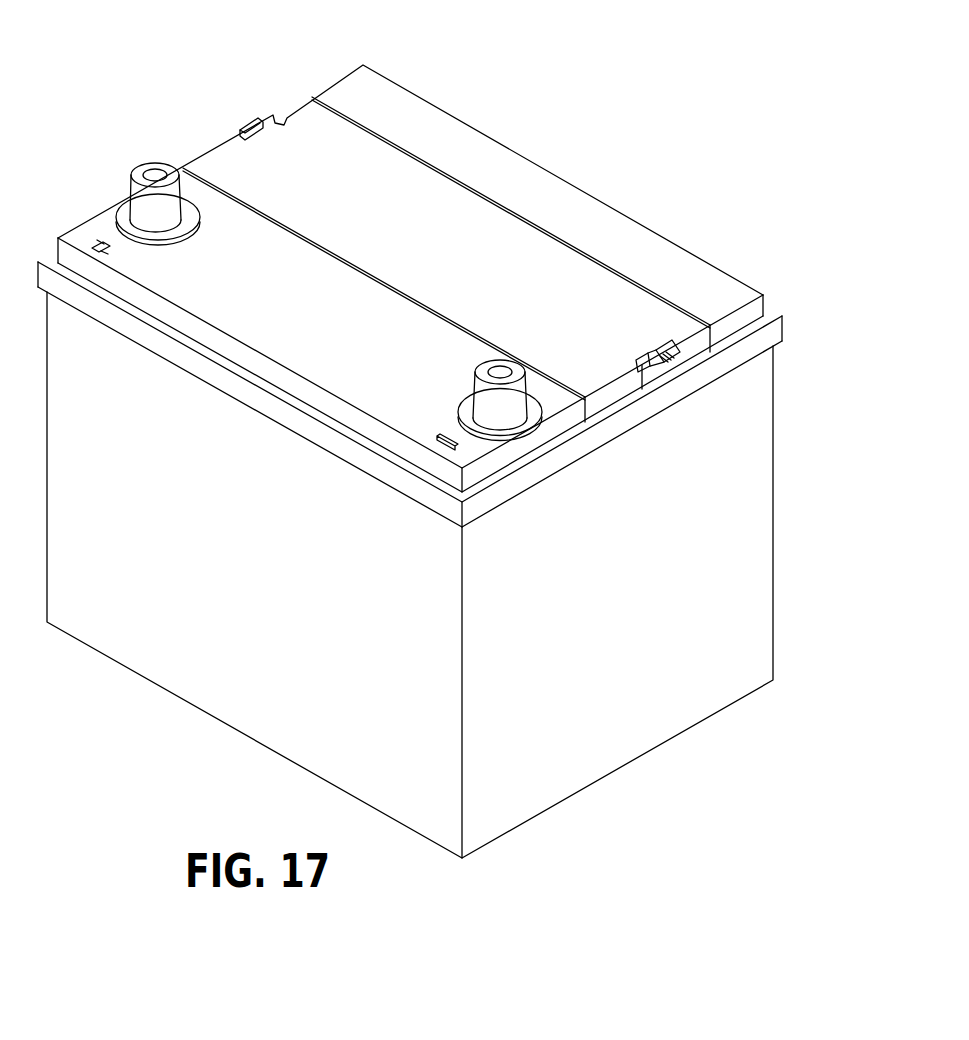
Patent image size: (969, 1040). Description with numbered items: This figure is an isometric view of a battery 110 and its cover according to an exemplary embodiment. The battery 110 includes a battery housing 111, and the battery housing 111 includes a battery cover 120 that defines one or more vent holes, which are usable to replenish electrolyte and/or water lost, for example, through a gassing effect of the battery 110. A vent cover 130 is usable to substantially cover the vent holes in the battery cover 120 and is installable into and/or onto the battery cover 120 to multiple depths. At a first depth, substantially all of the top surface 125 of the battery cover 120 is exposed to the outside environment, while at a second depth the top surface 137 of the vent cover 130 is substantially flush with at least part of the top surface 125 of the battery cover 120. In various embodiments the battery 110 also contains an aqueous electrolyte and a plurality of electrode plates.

The battery 110 is at (795, 464).
The battery housing 111 is at (737, 618).
The battery cover 120 is at (648, 196).
The top surface of the battery cover 125 is at (415, 120).
The vent cover 130 is at (226, 96).
The top surface of the vent cover 137 is at (636, 312).